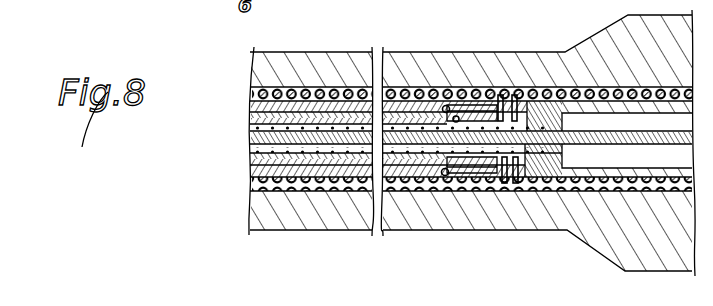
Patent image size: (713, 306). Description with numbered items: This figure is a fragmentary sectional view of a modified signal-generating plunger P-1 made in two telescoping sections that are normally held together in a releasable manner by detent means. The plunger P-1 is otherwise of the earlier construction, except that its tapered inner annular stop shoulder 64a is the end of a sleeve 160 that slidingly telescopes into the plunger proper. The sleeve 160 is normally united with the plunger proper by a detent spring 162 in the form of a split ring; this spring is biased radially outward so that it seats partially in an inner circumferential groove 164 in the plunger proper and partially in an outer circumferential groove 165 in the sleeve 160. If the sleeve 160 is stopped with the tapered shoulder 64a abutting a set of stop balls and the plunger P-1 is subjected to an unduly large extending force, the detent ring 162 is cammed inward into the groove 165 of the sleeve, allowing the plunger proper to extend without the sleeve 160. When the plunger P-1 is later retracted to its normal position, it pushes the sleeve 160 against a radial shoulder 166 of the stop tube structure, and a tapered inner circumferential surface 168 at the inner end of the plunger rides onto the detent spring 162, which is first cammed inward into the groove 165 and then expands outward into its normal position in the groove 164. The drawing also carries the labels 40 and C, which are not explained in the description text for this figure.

The cable 40 is at (262, 124).
The conductor C is at (264, 130).
The tapered inner annular stop shoulder 64a is at (262, 166).
The plunger P-1 is at (343, 97).
The sleeve 160 is at (322, 136).
The detent spring 162 is at (456, 116).
The inner circumferential groove 164 is at (446, 105).
The outer circumferential groove 165 is at (478, 102).
The radial shoulder 166 is at (504, 184).
The tapered inner circumferential surface 168 is at (484, 178).